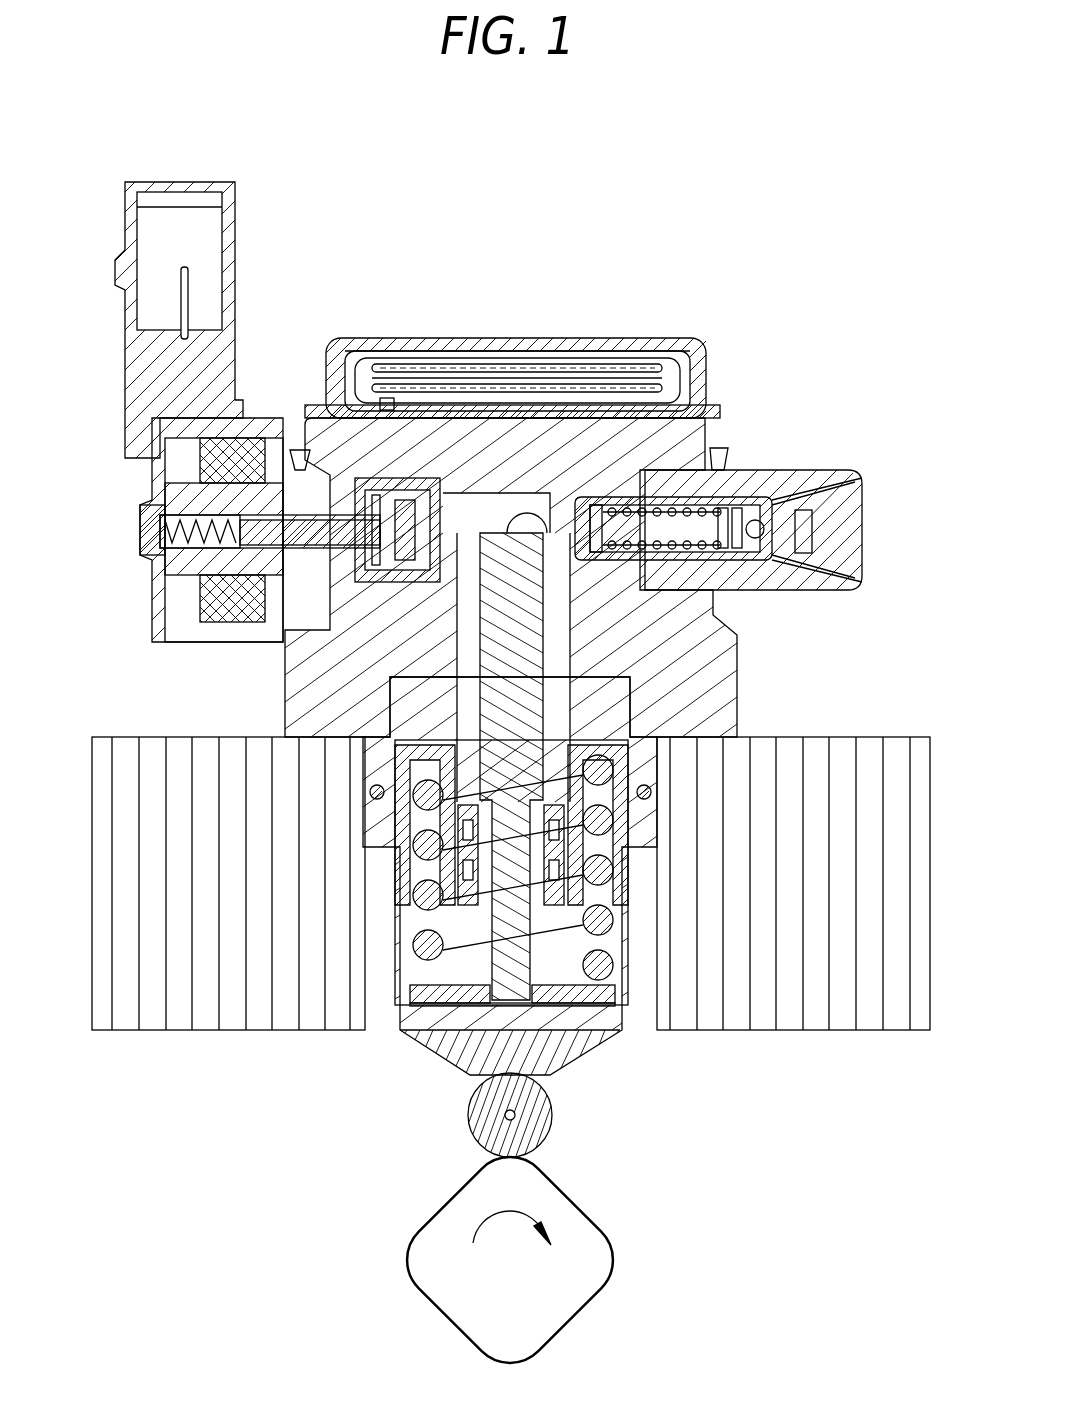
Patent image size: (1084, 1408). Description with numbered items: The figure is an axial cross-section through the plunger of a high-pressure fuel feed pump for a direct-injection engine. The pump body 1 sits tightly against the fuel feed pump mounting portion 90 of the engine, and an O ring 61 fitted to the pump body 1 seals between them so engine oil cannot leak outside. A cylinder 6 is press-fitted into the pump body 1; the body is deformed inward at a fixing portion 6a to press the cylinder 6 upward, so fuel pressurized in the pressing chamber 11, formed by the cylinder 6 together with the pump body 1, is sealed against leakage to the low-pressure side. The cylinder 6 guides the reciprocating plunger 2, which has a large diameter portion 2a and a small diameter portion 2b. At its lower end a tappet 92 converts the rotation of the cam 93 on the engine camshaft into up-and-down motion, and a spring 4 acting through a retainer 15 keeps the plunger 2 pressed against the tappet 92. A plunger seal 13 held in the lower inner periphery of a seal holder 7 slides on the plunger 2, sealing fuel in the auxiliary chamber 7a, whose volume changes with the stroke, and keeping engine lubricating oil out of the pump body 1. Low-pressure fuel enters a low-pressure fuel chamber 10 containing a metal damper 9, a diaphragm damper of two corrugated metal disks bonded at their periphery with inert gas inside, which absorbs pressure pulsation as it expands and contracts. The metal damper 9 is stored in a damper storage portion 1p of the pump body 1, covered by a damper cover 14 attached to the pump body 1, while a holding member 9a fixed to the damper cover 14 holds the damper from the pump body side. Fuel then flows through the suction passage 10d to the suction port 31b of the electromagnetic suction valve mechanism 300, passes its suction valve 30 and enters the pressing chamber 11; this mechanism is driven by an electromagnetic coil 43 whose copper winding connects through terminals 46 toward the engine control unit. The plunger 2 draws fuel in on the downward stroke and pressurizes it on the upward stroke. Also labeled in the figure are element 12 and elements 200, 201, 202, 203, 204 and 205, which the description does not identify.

The pump body 1 is at (650, 412).
The damper storage portion 1p is at (386, 400).
The plunger 2 is at (905, 1068).
The large diameter portion 2a is at (560, 655).
The small diameter portion 2b is at (613, 870).
The spring 4 is at (425, 872).
The cylinder 6 is at (472, 648).
The fixing portion 6a is at (430, 680).
The seal holder 7 is at (462, 848).
The auxiliary chamber 7a is at (468, 792).
The metal damper 9 is at (555, 355).
The holding member 9a is at (438, 400).
The low-pressure fuel chamber 10 is at (583, 398).
The suction passage 10d is at (352, 398).
The pressing chamber 11 is at (500, 515).
The discharge port 12 is at (845, 530).
The plunger seal 13 is at (613, 920).
The damper cover 14 is at (582, 345).
The retainer 15 is at (613, 1030).
The suction valve 30 is at (350, 482).
The suction port 31b is at (368, 478).
The electromagnetic coil 43 is at (228, 617).
The terminal 46 is at (184, 268).
The O ring 61 is at (372, 795).
The fuel feed pump mounting portion 90 is at (200, 958).
The tappet 92 is at (547, 1037).
The cam 93 is at (583, 1258).
The discharge valve mechanism 200 is at (960, 648).
The discharge valve holder 201 is at (840, 495).
The stopper 202 is at (795, 532).
The discharge valve 203 is at (752, 532).
The discharge valve spring 204 is at (662, 527).
The discharge valve seat 205 is at (600, 535).
The electromagnetic suction valve mechanism 300 is at (172, 582).